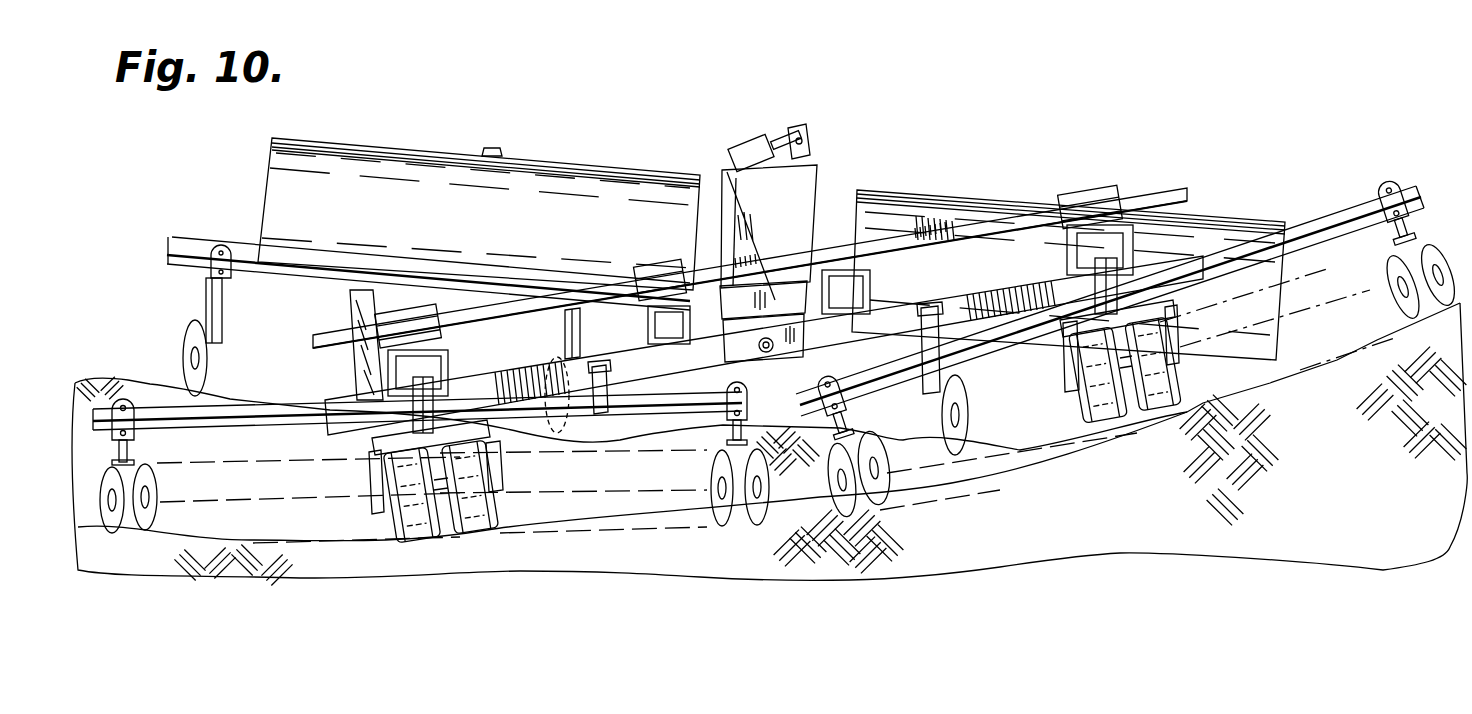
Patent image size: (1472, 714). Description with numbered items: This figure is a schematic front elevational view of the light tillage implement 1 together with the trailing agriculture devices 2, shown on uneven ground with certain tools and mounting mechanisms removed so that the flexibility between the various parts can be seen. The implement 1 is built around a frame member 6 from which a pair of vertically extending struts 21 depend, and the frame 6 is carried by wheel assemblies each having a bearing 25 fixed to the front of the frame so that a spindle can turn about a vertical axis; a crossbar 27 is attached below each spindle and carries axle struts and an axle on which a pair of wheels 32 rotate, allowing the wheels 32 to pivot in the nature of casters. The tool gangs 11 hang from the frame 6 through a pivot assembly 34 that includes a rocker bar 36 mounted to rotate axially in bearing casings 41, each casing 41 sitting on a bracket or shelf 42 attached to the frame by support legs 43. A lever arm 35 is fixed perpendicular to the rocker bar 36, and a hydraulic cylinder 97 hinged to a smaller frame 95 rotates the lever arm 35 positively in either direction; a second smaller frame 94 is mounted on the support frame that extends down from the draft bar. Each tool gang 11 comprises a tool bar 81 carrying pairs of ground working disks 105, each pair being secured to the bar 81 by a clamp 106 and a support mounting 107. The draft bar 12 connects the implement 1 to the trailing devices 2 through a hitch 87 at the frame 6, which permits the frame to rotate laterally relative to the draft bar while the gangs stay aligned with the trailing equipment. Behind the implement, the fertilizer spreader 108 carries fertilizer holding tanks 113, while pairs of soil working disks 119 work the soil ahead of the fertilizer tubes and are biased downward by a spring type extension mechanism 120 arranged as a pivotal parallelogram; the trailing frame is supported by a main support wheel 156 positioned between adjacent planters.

The implement for light tillage of soil 1 is at (1056, 180).
The trailing agriculture devices 2 is at (647, 156).
The frame member 6 is at (342, 425).
The ground working tool gangs 11 is at (283, 412).
The draft bar 12 is at (778, 300).
The vertically extending struts 21 is at (612, 408).
The bearing 25 is at (418, 403).
The crossbar 27 is at (490, 432).
The wheels 32 is at (482, 522).
The pivot assembly 34 is at (708, 266).
The lever arm 35 is at (752, 202).
The rocker bar 36 is at (902, 247).
The bearing casings 41 is at (420, 302).
The bracket or shelf 42 is at (445, 348).
The support legs 43 is at (648, 326).
The tool bar 81 is at (264, 408).
The hitch 87 is at (737, 342).
The second smaller frame 94 is at (826, 177).
The smaller frame 95 is at (805, 137).
The hydraulic cylinder 97 is at (752, 147).
The ground working disks 105 is at (160, 488).
The clamp 106 is at (128, 410).
The support mounting 107 is at (135, 438).
The fertilizer spreader 108 is at (440, 165).
The fertilizer holding tanks 113 is at (592, 178).
The soil working disks 119 is at (185, 348).
The spring type extension mechanism 120 is at (228, 316).
The main support wheel 156 is at (357, 316).